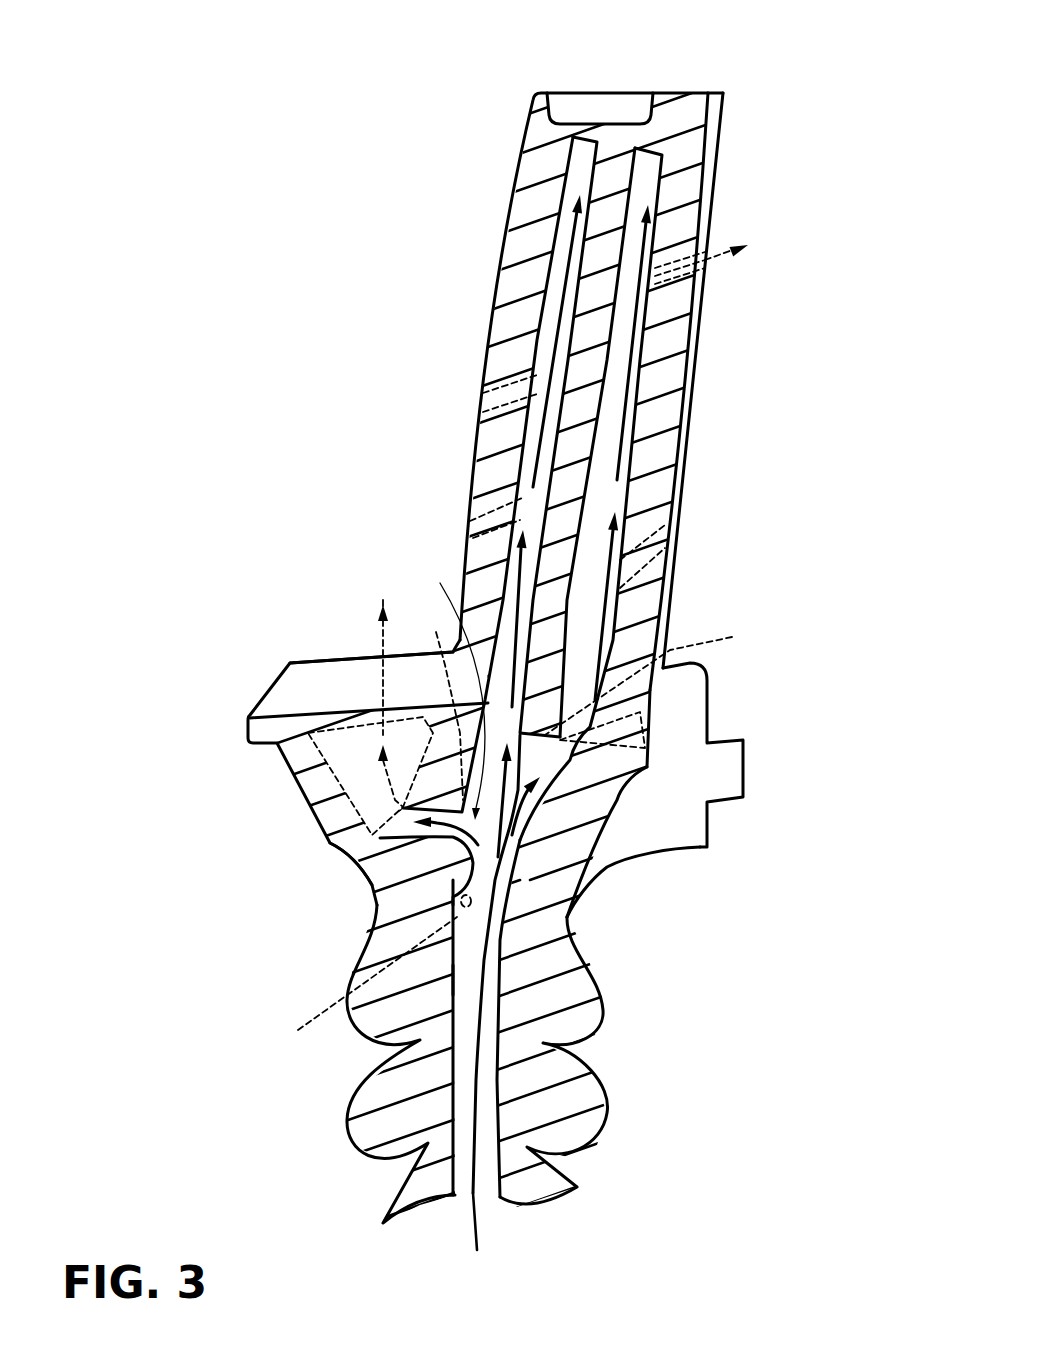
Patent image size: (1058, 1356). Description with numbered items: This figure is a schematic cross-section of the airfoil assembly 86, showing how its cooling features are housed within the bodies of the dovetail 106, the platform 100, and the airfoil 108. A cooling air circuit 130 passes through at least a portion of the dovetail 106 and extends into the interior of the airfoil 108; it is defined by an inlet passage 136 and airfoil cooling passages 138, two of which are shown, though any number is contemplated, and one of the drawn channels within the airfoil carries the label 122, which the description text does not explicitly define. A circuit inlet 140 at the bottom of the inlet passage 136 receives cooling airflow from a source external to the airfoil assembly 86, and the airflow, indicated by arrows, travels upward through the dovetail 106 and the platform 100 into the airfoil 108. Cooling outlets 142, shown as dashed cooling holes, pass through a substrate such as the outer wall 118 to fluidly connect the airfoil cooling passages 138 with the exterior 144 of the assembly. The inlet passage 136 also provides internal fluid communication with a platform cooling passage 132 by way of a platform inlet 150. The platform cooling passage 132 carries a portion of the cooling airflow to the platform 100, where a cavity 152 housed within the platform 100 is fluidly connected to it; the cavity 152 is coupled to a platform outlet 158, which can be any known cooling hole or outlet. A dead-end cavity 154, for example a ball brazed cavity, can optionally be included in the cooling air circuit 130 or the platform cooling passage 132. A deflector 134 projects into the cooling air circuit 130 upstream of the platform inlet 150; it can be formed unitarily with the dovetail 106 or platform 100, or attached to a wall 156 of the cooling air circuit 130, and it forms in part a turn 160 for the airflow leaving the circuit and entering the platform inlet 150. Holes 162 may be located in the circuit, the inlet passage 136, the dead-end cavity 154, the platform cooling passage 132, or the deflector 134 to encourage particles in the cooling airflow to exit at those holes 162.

The airfoil assembly 86 is at (852, 39).
The platform 100 is at (714, 721).
The dovetail 106 is at (334, 1112).
The airfoil 108 is at (692, 544).
The outer wall 118 is at (500, 237).
The first cooling channel 122 is at (540, 338).
The cooling air circuit 130 is at (512, 920).
The platform cooling passage 132 is at (390, 855).
The deflector 134 is at (450, 893).
The inlet passage 136 is at (480, 1050).
The airfoil cooling passage 138 is at (522, 468).
The circuit inlet 140 is at (507, 1207).
The cooling outlet 142 is at (650, 135).
The exterior 144 is at (202, 447).
The platform inlet 150 is at (455, 880).
The cavity 152 is at (315, 785).
The dead-end cavity 154 is at (645, 750).
The wall 156 is at (453, 980).
The platform outlet 158 is at (355, 718).
The turn 160 is at (441, 690).
The hole 162 is at (510, 824).